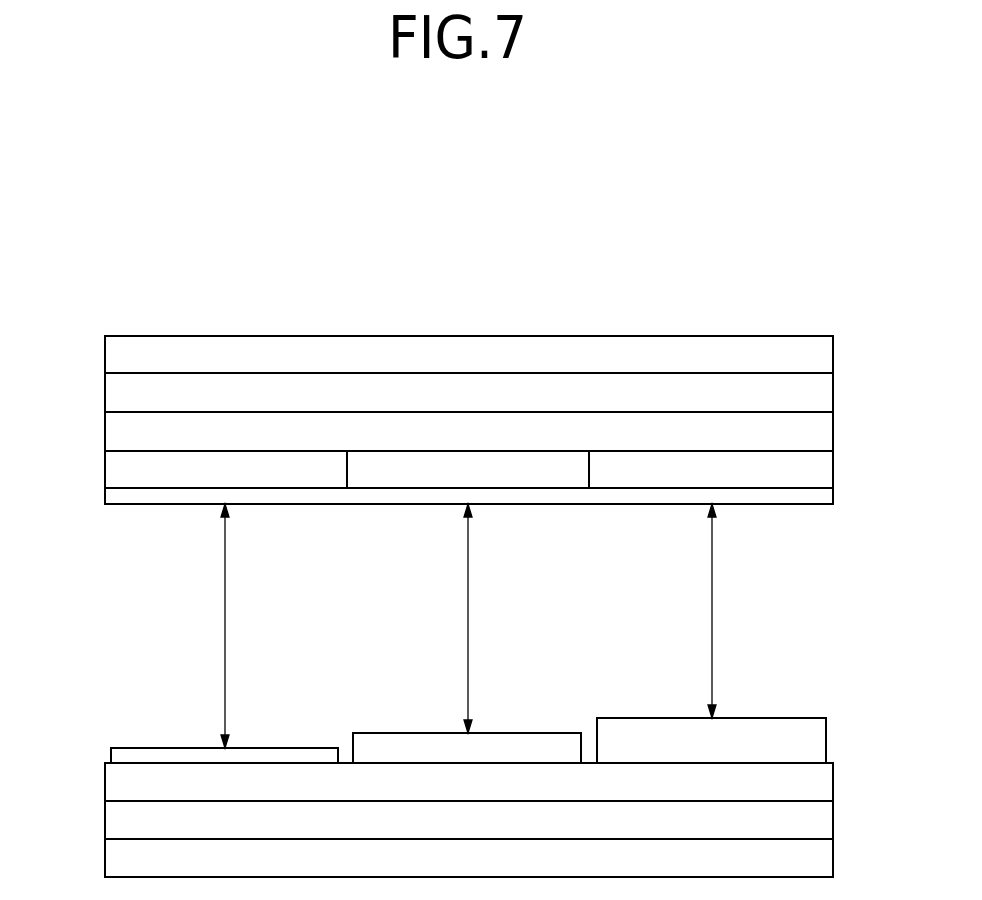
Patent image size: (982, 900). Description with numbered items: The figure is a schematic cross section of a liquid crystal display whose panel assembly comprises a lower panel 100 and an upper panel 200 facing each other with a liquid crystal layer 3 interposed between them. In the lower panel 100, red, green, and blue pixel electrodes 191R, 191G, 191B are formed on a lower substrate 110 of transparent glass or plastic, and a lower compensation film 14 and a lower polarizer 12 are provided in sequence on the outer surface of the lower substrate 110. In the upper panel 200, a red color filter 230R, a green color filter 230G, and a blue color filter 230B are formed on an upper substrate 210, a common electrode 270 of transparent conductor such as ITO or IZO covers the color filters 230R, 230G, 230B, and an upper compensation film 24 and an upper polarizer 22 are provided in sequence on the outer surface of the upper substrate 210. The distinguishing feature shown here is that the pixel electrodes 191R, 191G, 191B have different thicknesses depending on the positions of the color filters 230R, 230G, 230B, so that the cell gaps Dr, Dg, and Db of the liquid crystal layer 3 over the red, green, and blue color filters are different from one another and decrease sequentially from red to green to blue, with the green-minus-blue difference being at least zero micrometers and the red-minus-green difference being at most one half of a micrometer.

The upper polarizer 22 is at (130, 356).
The upper compensation film 24 is at (130, 393).
The upper substrate 210 is at (130, 432).
The common electrode 270 is at (130, 497).
The upper panel 200 is at (848, 413).
The red color filter 230R is at (168, 470).
The green color filter 230G is at (412, 470).
The blue color filter 230B is at (655, 470).
The liquid crystal layer 3 is at (846, 508).
The lower panel 100 is at (846, 718).
The lower substrate 110 is at (130, 781).
The lower compensation film 14 is at (130, 819).
The lower polarizer 12 is at (130, 859).
The red pixel electrode 191R is at (287, 758).
The green pixel electrode 191G is at (532, 750).
The blue pixel electrode 191B is at (775, 737).